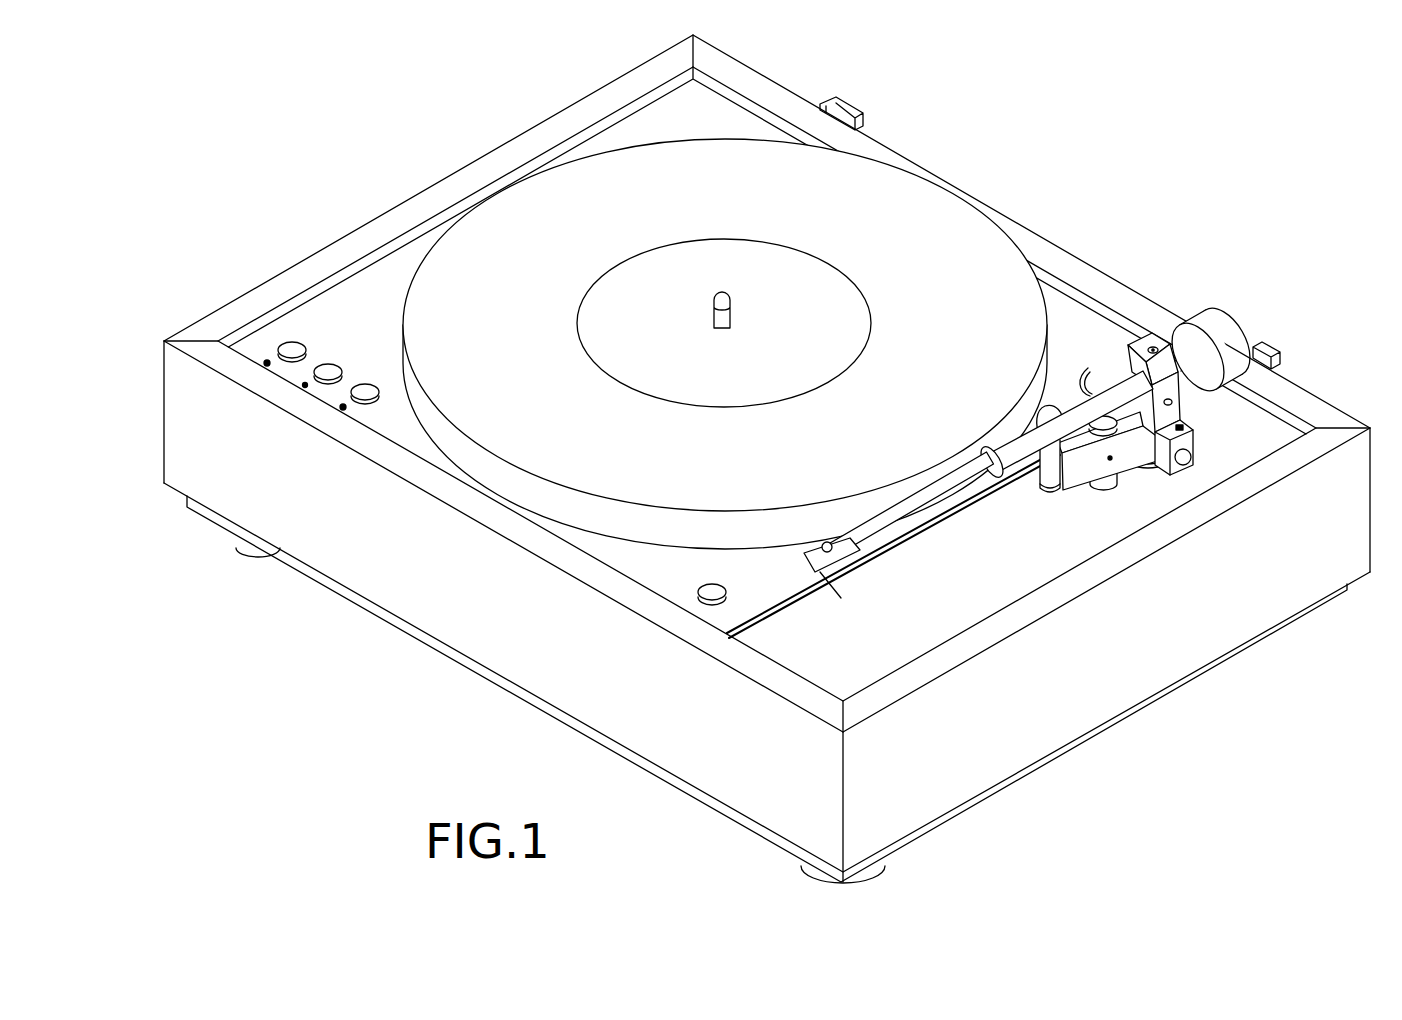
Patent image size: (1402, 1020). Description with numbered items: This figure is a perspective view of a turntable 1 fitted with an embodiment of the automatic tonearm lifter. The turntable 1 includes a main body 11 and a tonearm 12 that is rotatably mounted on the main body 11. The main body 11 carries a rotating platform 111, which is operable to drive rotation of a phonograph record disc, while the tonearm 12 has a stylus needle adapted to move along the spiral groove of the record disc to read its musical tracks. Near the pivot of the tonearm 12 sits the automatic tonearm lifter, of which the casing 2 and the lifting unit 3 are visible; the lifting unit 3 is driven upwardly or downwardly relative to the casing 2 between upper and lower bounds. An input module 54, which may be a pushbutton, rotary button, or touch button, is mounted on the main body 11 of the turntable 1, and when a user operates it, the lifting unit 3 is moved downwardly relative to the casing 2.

The turntable 1 is at (767, 464).
The main body 11 is at (1000, 720).
The rotating platform 111 is at (925, 230).
The tonearm 12 is at (922, 500).
The casing 2 is at (1112, 478).
The lifting unit 3 is at (1085, 372).
The input module 54 is at (712, 595).